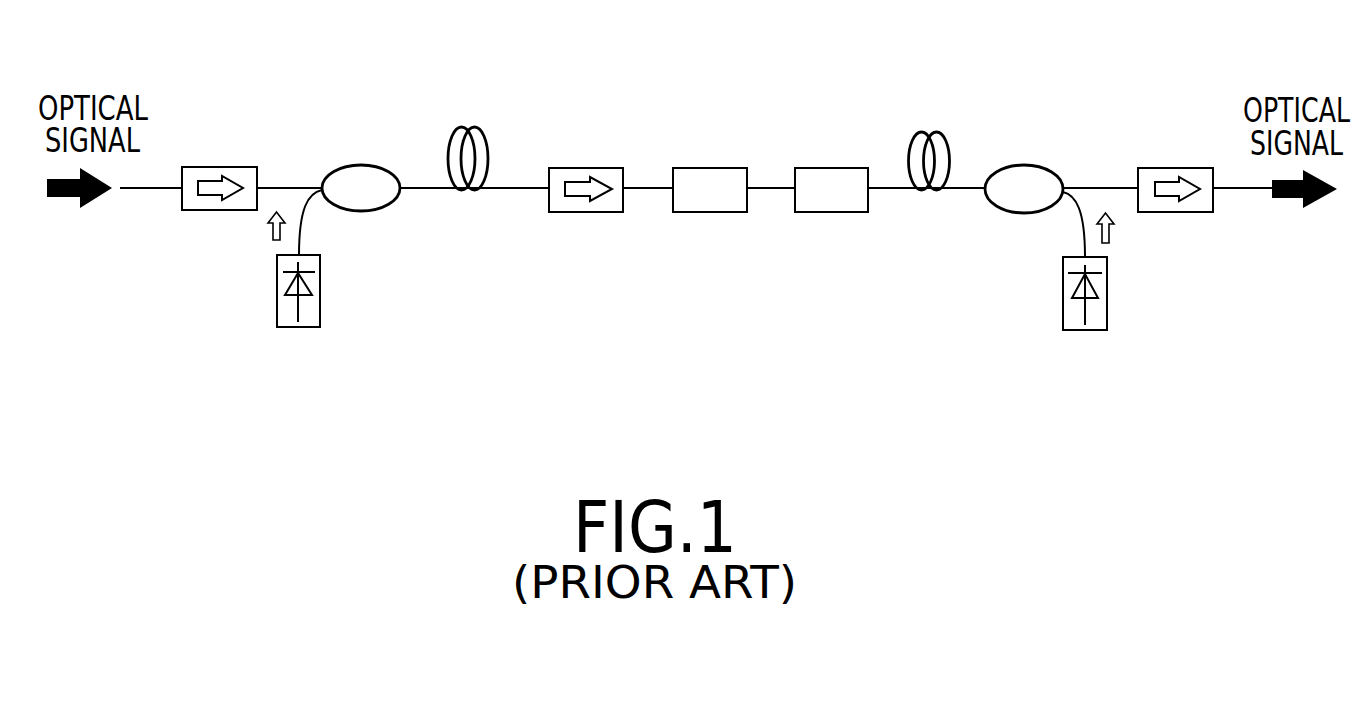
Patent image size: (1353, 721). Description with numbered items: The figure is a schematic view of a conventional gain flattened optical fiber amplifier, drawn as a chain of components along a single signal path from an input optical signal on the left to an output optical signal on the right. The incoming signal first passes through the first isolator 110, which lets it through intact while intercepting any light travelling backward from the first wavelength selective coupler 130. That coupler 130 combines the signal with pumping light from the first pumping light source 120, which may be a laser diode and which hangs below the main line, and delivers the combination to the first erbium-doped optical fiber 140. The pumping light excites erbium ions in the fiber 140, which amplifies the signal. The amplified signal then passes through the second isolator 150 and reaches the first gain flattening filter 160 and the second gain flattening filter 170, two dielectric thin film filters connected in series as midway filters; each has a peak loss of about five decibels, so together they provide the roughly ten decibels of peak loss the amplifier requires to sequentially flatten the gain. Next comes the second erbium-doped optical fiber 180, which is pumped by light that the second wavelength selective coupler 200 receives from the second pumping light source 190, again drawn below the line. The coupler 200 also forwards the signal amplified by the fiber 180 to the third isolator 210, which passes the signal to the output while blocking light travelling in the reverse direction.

The first isolator 110 is at (216, 167).
The first pumping light source 120 is at (320, 290).
The first wavelength selective coupler 130 is at (355, 165).
The first erbium-doped optical fiber 140 is at (466, 127).
The second isolator 150 is at (585, 168).
The first gain flattening filter 160 is at (708, 168).
The second gain flattening filter 170 is at (833, 168).
The second erbium-doped optical fiber 180 is at (928, 132).
The second pumping light source 190 is at (1063, 292).
The second wavelength selective coupler 200 is at (1022, 166).
The third isolator 210 is at (1173, 168).